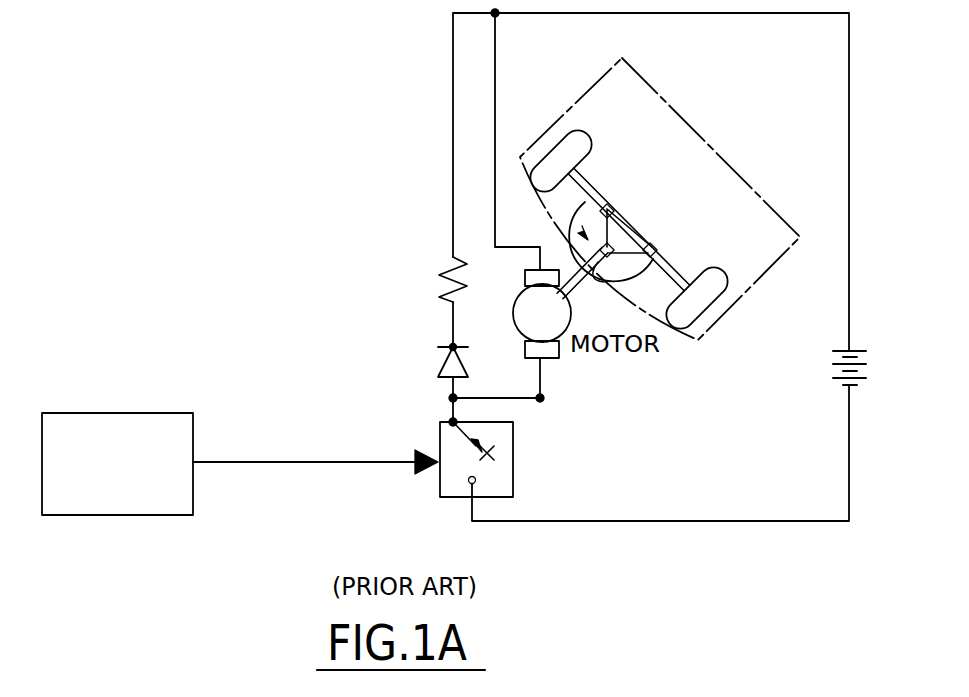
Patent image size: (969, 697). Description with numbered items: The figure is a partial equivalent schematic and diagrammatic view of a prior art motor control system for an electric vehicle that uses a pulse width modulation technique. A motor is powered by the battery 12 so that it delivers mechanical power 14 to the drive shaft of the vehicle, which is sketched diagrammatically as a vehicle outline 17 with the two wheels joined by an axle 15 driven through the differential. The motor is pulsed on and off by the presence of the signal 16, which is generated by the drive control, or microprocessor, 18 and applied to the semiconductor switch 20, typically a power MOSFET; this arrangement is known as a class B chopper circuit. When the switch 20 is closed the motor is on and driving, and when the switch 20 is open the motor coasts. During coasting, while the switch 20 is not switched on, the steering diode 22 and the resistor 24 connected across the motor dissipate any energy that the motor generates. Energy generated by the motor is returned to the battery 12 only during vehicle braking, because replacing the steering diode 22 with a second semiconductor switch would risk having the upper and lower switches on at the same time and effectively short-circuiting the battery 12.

The battery 12 is at (832, 372).
The mechanical power 14 is at (653, 263).
The axle 15 is at (596, 184).
The signal 16 is at (312, 463).
The vehicle 17 is at (717, 140).
The drive control 18 is at (152, 412).
The semiconductor switch 20 is at (515, 462).
The steering diode 22 is at (452, 343).
The resistor 24 is at (445, 270).